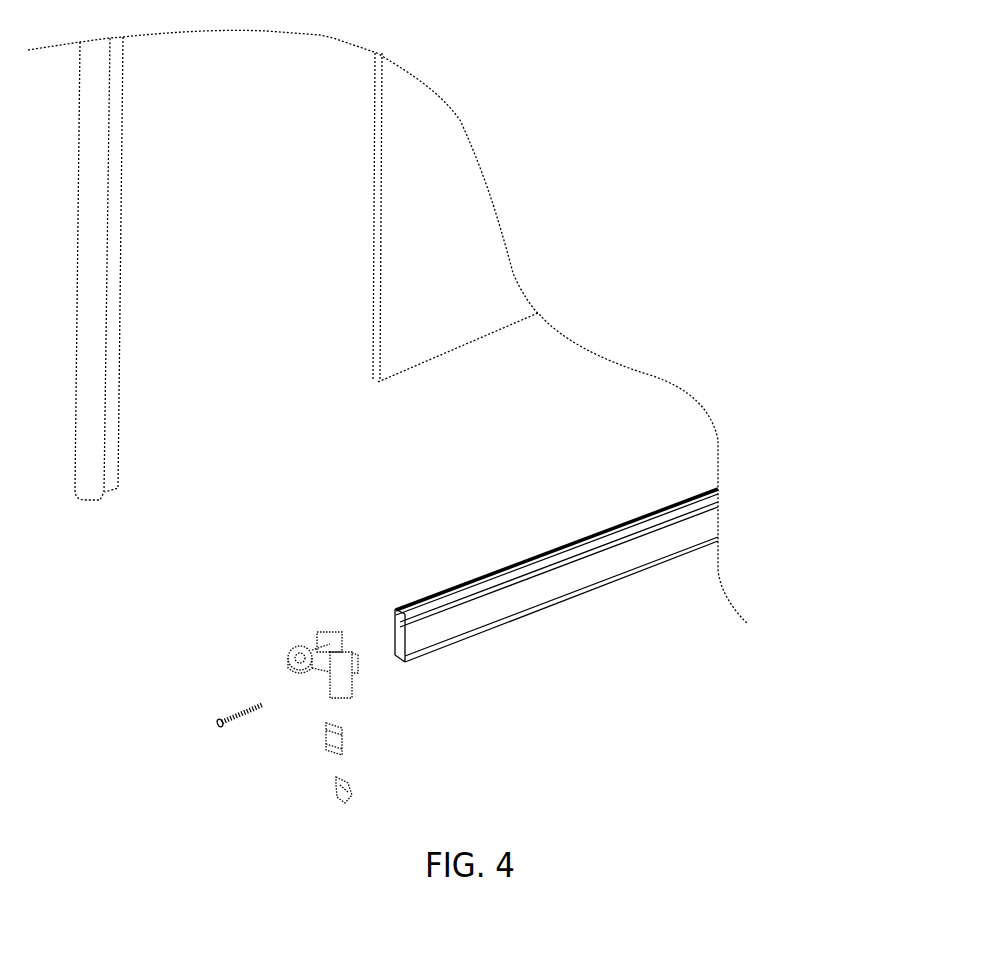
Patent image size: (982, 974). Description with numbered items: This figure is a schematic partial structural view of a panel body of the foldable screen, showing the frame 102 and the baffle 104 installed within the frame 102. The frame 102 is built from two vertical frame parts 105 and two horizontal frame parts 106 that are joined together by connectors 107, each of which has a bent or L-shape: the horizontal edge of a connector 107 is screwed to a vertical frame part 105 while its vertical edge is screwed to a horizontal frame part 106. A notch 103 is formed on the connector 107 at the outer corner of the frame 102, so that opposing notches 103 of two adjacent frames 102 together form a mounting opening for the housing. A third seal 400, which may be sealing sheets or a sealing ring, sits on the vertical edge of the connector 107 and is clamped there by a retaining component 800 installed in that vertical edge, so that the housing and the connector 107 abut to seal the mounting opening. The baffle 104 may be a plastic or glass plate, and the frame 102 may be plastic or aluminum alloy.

The frame 102 is at (777, 477).
The notch 103 is at (313, 687).
The baffle 104 is at (465, 238).
The vertical frame part 105 is at (98, 429).
The horizontal frame part 106 is at (690, 535).
The connector 107 is at (326, 653).
The third seal 400 is at (340, 740).
The retaining component 800 is at (348, 790).